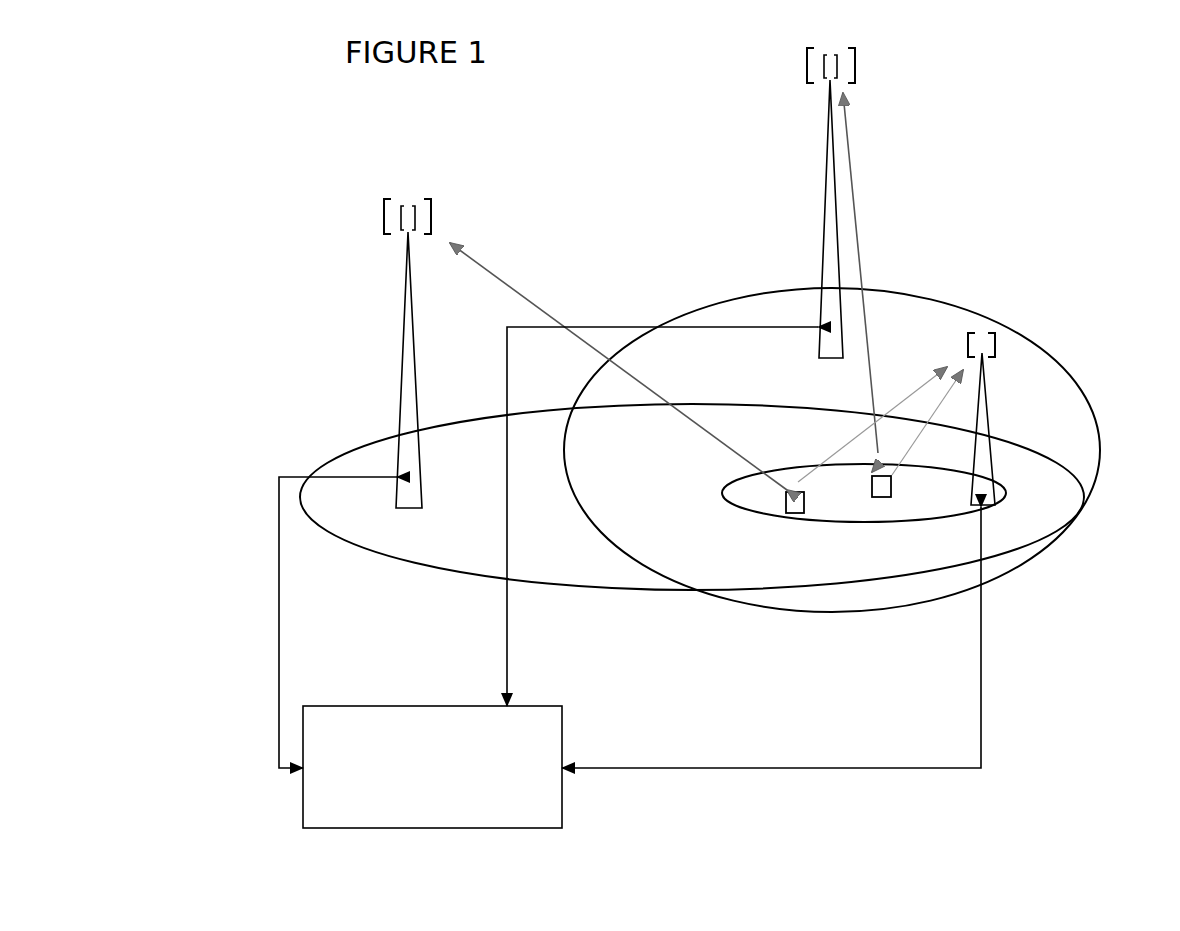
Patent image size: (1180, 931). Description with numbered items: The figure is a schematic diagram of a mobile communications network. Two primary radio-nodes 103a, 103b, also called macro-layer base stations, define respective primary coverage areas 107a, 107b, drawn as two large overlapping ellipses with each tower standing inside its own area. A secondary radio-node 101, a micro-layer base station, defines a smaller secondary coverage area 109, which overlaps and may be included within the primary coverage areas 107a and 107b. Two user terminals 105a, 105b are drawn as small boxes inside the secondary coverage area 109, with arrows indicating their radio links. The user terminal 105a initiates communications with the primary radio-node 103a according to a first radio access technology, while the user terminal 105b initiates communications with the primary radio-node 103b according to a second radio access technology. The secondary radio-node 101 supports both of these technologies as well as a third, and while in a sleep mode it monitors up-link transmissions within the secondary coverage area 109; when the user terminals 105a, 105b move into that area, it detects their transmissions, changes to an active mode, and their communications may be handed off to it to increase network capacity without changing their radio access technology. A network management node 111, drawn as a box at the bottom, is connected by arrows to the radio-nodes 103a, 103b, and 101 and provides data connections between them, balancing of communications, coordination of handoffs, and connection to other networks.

The secondary radio-node 101 is at (992, 400).
The primary radio-node 103a is at (398, 360).
The primary radio-node 103b is at (818, 187).
The user terminal 105a is at (785, 516).
The user terminal 105b is at (884, 498).
The primary coverage area 107a is at (345, 453).
The primary coverage area 107b is at (682, 313).
The secondary coverage area 109 is at (863, 522).
The network management node 111 is at (303, 798).